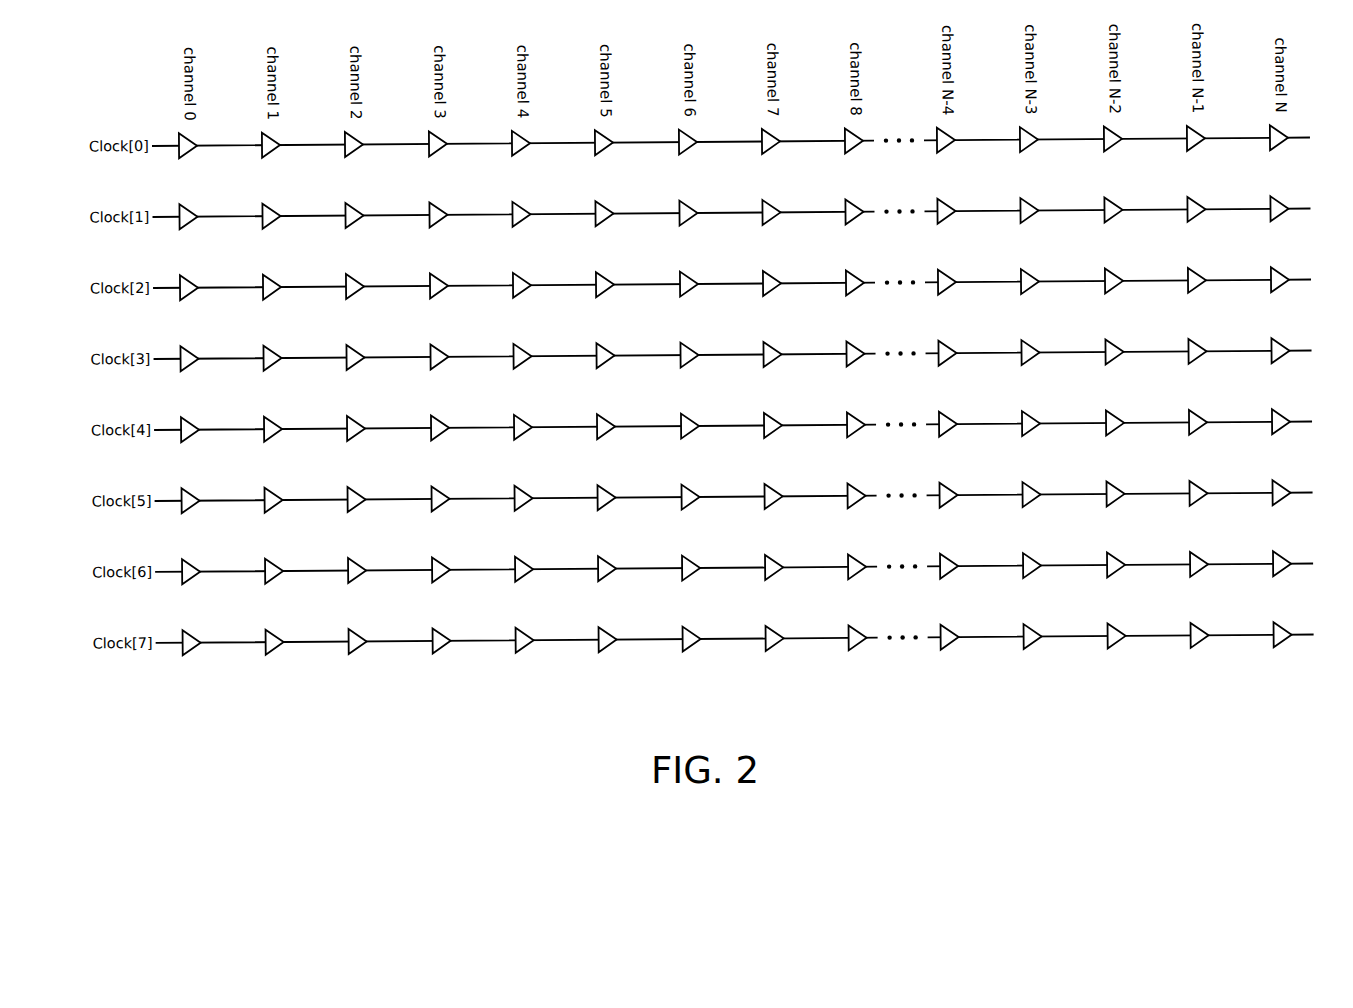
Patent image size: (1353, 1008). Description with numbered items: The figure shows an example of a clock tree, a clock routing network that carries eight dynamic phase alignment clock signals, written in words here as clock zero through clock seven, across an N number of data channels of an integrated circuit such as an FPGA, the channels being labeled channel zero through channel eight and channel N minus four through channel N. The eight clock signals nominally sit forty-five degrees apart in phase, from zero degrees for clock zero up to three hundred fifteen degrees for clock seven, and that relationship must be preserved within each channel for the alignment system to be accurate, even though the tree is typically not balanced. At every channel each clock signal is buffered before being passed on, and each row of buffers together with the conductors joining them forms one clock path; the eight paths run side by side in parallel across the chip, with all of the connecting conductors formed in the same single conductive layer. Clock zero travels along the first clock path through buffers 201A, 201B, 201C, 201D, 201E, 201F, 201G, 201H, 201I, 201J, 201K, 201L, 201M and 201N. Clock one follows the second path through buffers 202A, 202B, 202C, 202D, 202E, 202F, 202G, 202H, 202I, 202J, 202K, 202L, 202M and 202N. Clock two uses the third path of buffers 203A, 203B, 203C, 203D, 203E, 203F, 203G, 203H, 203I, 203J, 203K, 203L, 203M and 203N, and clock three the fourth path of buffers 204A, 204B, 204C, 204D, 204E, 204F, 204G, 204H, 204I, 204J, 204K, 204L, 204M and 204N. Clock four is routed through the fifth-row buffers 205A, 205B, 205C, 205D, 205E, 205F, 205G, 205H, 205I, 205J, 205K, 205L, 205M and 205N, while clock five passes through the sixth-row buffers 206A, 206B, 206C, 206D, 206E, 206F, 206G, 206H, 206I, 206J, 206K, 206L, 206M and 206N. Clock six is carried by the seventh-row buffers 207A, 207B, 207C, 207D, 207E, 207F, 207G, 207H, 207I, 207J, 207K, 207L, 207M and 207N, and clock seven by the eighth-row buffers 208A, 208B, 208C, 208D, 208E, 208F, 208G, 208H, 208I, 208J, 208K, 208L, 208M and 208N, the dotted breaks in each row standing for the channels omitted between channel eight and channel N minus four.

The buffer 201A is at (189, 153).
The buffer 201B is at (272, 153).
The buffer 201C is at (355, 153).
The buffer 201D is at (439, 153).
The buffer 201E is at (522, 153).
The buffer 201F is at (605, 153).
The buffer 201G is at (689, 153).
The buffer 201H is at (772, 153).
The buffer 201I is at (855, 153).
The buffer 201J is at (947, 153).
The buffer 201K is at (1030, 153).
The buffer 201L is at (1114, 153).
The buffer 201M is at (1197, 153).
The buffer 201N is at (1280, 153).
The buffer 202A is at (189, 224).
The buffer 202B is at (272, 224).
The buffer 202C is at (355, 224).
The buffer 202D is at (439, 224).
The buffer 202E is at (522, 224).
The buffer 202F is at (605, 224).
The buffer 202G is at (689, 224).
The buffer 202H is at (772, 224).
The buffer 202I is at (855, 224).
The buffer 202J is at (947, 224).
The buffer 202K is at (1030, 224).
The buffer 202L is at (1114, 224).
The buffer 202M is at (1197, 224).
The buffer 202N is at (1280, 224).
The buffer 203A is at (189, 295).
The buffer 203B is at (272, 295).
The buffer 203C is at (355, 295).
The buffer 203D is at (439, 295).
The buffer 203E is at (522, 295).
The buffer 203F is at (605, 295).
The buffer 203G is at (689, 295).
The buffer 203H is at (772, 295).
The buffer 203I is at (855, 295).
The buffer 203J is at (947, 295).
The buffer 203K is at (1030, 295).
The buffer 203L is at (1114, 295).
The buffer 203M is at (1197, 295).
The buffer 203N is at (1280, 295).
The buffer 204A is at (189, 366).
The buffer 204B is at (272, 366).
The buffer 204C is at (355, 366).
The buffer 204D is at (439, 366).
The buffer 204E is at (522, 366).
The buffer 204F is at (605, 366).
The buffer 204G is at (689, 366).
The buffer 204H is at (772, 366).
The buffer 204I is at (855, 366).
The buffer 204J is at (947, 366).
The buffer 204K is at (1030, 366).
The buffer 204L is at (1114, 366).
The buffer 204M is at (1197, 366).
The buffer 204N is at (1280, 366).
The buffer 205A is at (189, 437).
The buffer 205B is at (272, 437).
The buffer 205C is at (355, 437).
The buffer 205D is at (439, 437).
The buffer 205E is at (522, 437).
The buffer 205F is at (605, 437).
The buffer 205G is at (689, 437).
The buffer 205H is at (772, 437).
The buffer 205I is at (855, 437).
The buffer 205J is at (947, 437).
The buffer 205K is at (1030, 437).
The buffer 205L is at (1114, 437).
The buffer 205M is at (1197, 437).
The buffer 205N is at (1280, 437).
The buffer 206A is at (189, 508).
The buffer 206B is at (272, 508).
The buffer 206C is at (355, 508).
The buffer 206D is at (439, 508).
The buffer 206E is at (522, 508).
The buffer 206F is at (605, 508).
The buffer 206G is at (689, 508).
The buffer 206H is at (772, 508).
The buffer 206I is at (855, 508).
The buffer 206J is at (947, 508).
The buffer 206K is at (1030, 508).
The buffer 206L is at (1114, 508).
The buffer 206M is at (1197, 508).
The buffer 206N is at (1280, 508).
The buffer 207A is at (189, 579).
The buffer 207B is at (272, 579).
The buffer 207C is at (355, 579).
The buffer 207D is at (439, 579).
The buffer 207E is at (522, 579).
The buffer 207F is at (605, 579).
The buffer 207G is at (689, 579).
The buffer 207H is at (772, 579).
The buffer 207I is at (855, 579).
The buffer 207J is at (947, 579).
The buffer 207K is at (1030, 579).
The buffer 207L is at (1114, 579).
The buffer 207M is at (1197, 579).
The buffer 207N is at (1280, 579).
The buffer 208A is at (189, 650).
The buffer 208B is at (272, 650).
The buffer 208C is at (355, 650).
The buffer 208D is at (439, 650).
The buffer 208E is at (522, 650).
The buffer 208F is at (605, 650).
The buffer 208G is at (689, 650).
The buffer 208H is at (772, 650).
The buffer 208I is at (855, 650).
The buffer 208J is at (947, 650).
The buffer 208K is at (1030, 650).
The buffer 208L is at (1114, 650).
The buffer 208M is at (1197, 650).
The buffer 208N is at (1280, 650).